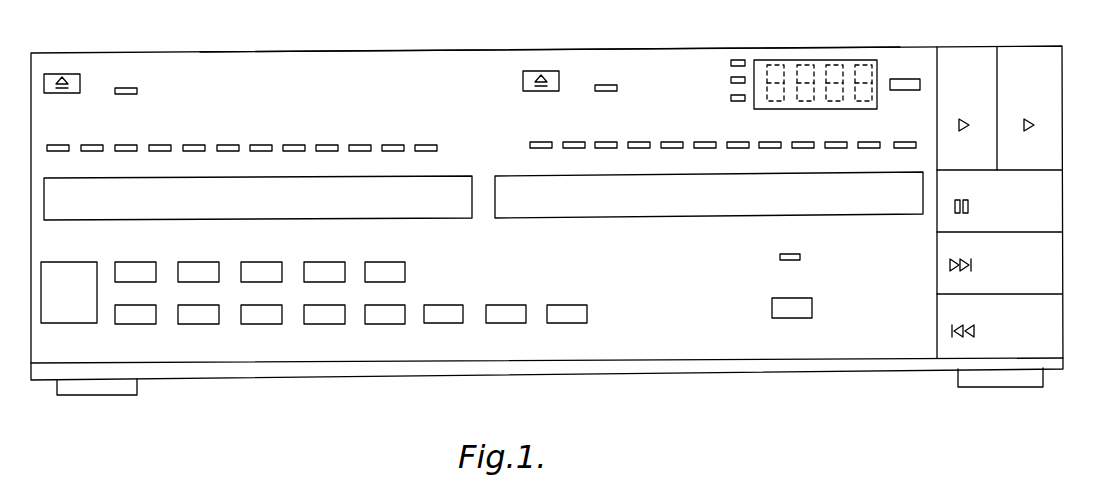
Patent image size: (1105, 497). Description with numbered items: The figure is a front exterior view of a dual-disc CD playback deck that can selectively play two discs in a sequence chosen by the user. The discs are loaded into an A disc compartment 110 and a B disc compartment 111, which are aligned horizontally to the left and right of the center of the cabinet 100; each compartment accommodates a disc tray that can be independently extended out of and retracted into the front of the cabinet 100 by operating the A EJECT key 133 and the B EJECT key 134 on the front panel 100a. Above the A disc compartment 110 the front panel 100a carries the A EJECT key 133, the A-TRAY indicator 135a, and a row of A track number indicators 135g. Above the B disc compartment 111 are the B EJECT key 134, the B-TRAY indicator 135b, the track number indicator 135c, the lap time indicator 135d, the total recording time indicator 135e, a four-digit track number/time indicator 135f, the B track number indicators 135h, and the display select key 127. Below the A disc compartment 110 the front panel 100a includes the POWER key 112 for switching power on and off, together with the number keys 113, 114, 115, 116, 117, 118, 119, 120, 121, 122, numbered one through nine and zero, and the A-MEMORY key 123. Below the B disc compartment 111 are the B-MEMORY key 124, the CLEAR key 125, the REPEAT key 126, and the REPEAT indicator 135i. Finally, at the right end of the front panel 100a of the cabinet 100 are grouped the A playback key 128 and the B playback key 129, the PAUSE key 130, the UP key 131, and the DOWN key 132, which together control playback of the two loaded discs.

The cabinet 100 is at (522, 381).
The front panel 100a is at (369, 63).
The A disc compartment 110 is at (87, 215).
The B disc compartment 111 is at (600, 212).
The POWER key 112 is at (75, 323).
The number key 113 is at (150, 262).
The number key 114 is at (215, 262).
The number key 115 is at (277, 262).
The number key 116 is at (340, 262).
The number key 117 is at (397, 262).
The number key 118 is at (138, 324).
The number key 119 is at (200, 324).
The number key 120 is at (262, 324).
The number key 121 is at (325, 324).
The number key 122 is at (385, 324).
The A-MEMORY key 123 is at (445, 324).
The B-MEMORY key 124 is at (508, 324).
The CLEAR key 125 is at (570, 324).
The REPEAT key 126 is at (795, 318).
The display select (DISPLAY) key 127 is at (905, 51).
The A playback key (A-PLAY) 128 is at (962, 51).
The B playback key (B-PLAY) 129 is at (1028, 51).
The PAUSE key 130 is at (1042, 193).
The UP key 131 is at (1045, 277).
The DOWN key 132 is at (1048, 341).
The A EJECT key 133 is at (67, 72).
The B EJECT key 134 is at (538, 68).
The A-TRAY indicator 135a is at (131, 58).
The B-TRAY indicator 135b is at (600, 62).
The track number (TNO, X) indicator 135c is at (677, 58).
The lap time (LAP) indicator 135d is at (680, 82).
The total recording time (TOTAL) indicator 135e is at (680, 97).
The 4-digit track number/time indicator 135f is at (800, 61).
The A track number indicators 135g is at (253, 128).
The B track number indicators 135h is at (708, 152).
The REPEAT indicator 135i is at (802, 257).